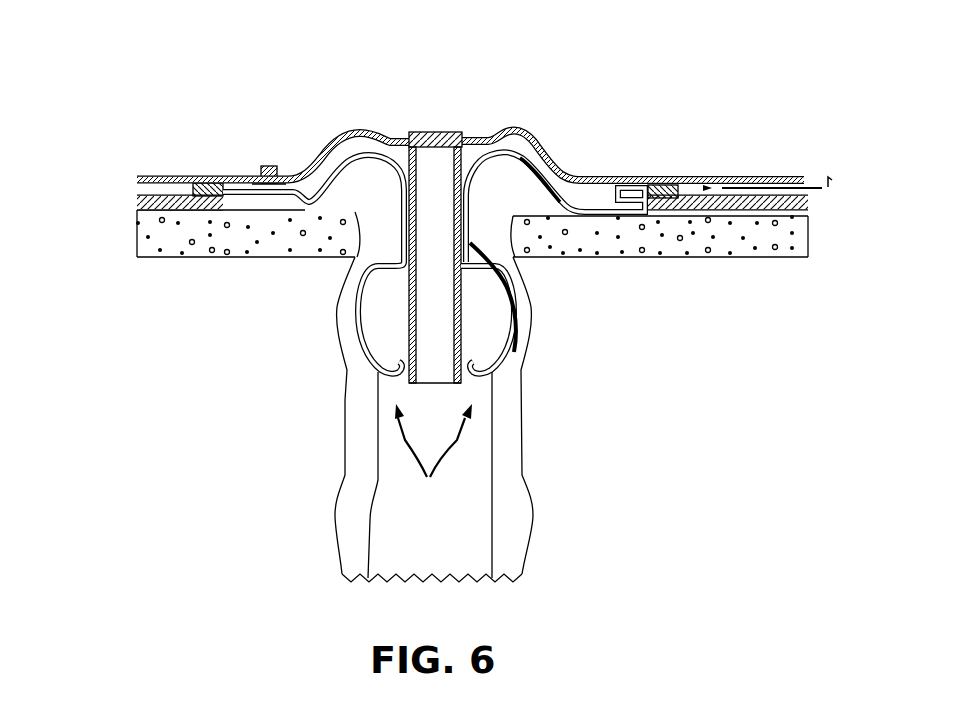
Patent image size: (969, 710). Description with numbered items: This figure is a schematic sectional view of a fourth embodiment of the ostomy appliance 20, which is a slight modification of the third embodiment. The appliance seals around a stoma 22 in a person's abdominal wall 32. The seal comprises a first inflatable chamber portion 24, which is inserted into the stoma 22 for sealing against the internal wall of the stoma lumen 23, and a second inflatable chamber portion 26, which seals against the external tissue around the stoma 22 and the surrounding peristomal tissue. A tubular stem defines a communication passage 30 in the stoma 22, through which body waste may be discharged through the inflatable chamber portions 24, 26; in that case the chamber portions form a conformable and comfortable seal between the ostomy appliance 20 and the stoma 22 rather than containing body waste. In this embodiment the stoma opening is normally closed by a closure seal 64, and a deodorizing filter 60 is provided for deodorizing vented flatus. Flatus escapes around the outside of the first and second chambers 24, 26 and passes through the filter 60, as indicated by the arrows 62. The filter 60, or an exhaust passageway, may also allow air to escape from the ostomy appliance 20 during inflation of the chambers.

The ostomy appliance 20 is at (412, 60).
The stoma 22 is at (363, 188).
The stoma lumen 23 is at (497, 474).
The first inflatable chamber portion 24 is at (493, 320).
The second inflatable chamber portion 26 is at (527, 148).
The communication passage 30 is at (442, 182).
The abdominal wall 32 is at (137, 240).
The deodorizing filter 60 is at (663, 190).
The arrows 62 is at (822, 188).
The closure seal 64 is at (427, 133).